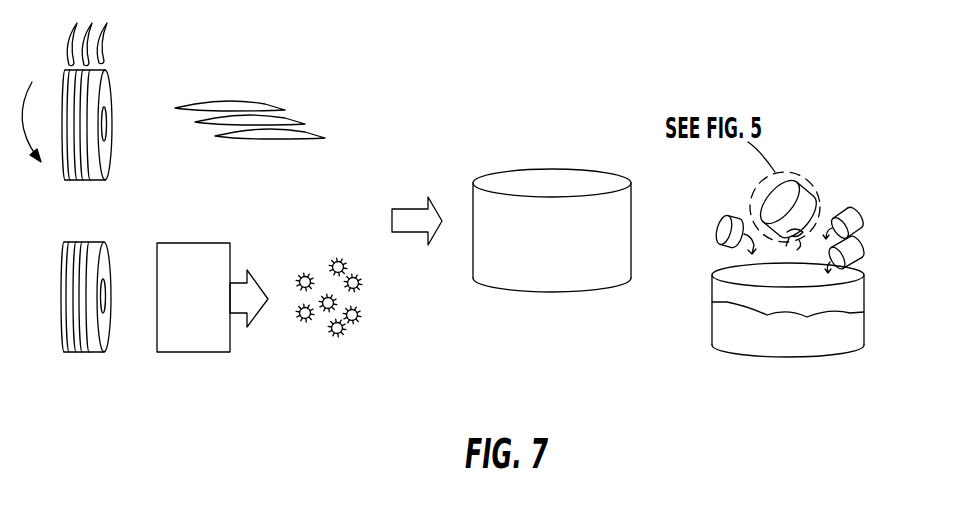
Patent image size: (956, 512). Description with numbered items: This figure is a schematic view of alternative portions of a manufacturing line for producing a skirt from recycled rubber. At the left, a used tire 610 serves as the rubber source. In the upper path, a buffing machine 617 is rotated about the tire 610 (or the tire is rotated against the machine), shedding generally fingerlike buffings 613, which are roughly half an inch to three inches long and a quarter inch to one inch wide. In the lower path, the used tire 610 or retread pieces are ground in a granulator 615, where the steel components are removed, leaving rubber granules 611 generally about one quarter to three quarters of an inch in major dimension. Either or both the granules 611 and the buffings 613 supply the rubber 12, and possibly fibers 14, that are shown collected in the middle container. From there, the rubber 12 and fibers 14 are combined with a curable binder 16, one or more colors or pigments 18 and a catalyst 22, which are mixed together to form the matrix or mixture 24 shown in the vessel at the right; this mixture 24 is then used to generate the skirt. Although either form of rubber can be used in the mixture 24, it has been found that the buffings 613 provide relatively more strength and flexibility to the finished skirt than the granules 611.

The rubber 12 is at (762, 236).
The fibers 14 is at (817, 217).
The curable binder 16 is at (747, 242).
The color 18 is at (836, 222).
The catalyst 22 is at (850, 256).
The mixture 24 is at (801, 347).
The used tire 610 is at (108, 149).
The granules 611 is at (368, 338).
The buffings 613 is at (292, 88).
The granulator 615 is at (210, 321).
The buffing machine 617 is at (136, 37).